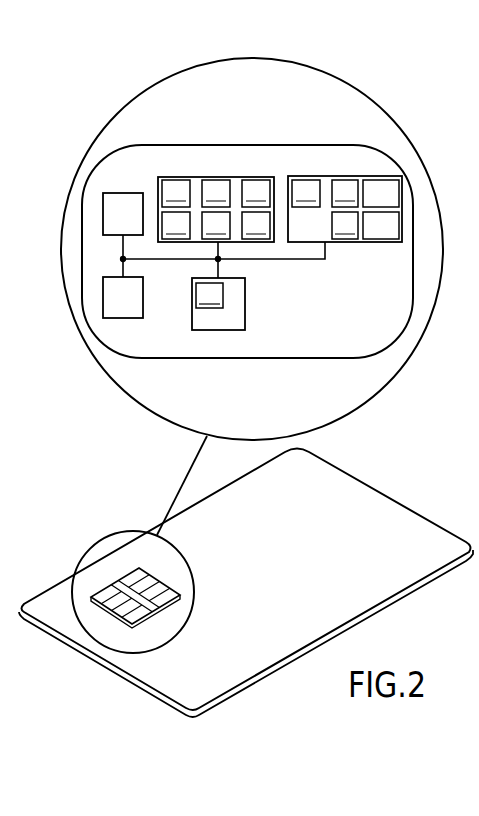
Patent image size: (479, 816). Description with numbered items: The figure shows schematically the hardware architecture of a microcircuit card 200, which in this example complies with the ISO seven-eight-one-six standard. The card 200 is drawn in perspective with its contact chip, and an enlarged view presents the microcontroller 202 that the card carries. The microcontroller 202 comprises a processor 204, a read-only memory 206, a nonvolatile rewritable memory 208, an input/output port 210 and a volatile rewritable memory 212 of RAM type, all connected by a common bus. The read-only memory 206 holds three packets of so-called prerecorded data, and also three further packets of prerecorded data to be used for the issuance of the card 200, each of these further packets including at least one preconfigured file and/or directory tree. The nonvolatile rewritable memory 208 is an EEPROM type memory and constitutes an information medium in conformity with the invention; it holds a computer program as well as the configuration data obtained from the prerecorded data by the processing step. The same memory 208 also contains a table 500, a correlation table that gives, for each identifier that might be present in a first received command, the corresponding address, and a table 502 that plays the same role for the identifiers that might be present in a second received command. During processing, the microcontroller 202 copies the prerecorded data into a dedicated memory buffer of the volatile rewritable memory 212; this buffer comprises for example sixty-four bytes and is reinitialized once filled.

The microcircuit card 200 is at (380, 481).
The microcontroller 202 is at (120, 568).
The processor 204 is at (111, 222).
The read-only memory 206 is at (221, 177).
The nonvolatile rewritable memory 208 is at (345, 198).
The input/output port 210 is at (111, 307).
The volatile rewritable memory 212 is at (245, 297).
The table 500 is at (367, 201).
The table 502 is at (367, 234).